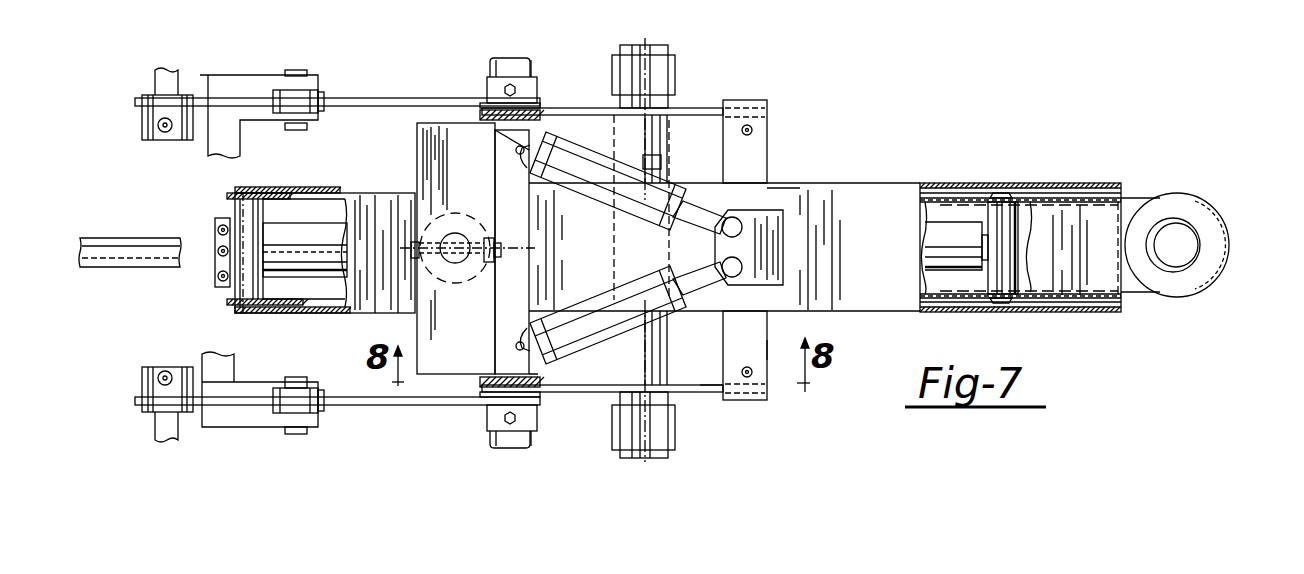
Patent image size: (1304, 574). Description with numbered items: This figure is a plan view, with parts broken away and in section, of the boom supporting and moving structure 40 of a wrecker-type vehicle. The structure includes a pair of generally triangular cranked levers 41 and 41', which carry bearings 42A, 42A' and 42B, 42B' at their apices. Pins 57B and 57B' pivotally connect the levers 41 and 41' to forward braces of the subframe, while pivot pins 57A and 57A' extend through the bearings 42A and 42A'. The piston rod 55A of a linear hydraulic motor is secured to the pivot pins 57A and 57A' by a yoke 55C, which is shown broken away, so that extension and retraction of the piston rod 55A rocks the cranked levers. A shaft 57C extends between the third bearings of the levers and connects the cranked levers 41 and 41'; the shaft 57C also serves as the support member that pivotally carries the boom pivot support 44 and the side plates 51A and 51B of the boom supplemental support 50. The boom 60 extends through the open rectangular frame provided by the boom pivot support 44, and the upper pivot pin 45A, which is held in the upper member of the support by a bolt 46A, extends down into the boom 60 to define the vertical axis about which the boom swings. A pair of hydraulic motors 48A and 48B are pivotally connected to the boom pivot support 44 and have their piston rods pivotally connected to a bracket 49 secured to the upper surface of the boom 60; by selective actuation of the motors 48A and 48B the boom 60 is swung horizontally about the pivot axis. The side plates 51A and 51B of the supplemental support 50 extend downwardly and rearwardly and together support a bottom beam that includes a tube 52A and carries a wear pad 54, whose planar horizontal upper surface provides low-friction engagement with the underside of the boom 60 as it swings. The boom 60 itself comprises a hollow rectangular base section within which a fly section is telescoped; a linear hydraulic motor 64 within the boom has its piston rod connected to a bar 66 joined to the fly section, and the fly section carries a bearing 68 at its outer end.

The boom supporting and moving structure 40 is at (468, 429).
The cranked lever 41 is at (339, 416).
The cranked lever 41' is at (339, 78).
The bearing 42A is at (337, 416).
The bearing 42A' is at (334, 87).
The bearing 42B is at (125, 389).
The bearing 42B' is at (124, 117).
The boom pivot support 44 is at (417, 153).
The upper pivot pin 45A is at (455, 260).
The bolt 46A is at (413, 242).
The hydraulic motor 48A is at (590, 160).
The hydraulic motor 48B is at (597, 320).
The bracket 49 is at (740, 240).
The boom supplemental support 50 is at (702, 390).
The side plate 51A is at (583, 395).
The side plate 51B is at (569, 108).
The tube 52A is at (647, 160).
The wear pad 54 is at (762, 350).
The piston rod 55A is at (140, 268).
The yoke 55C is at (222, 85).
The pivot pin 57A is at (318, 386).
The pivot pin 57A' is at (340, 83).
The pin 57B is at (123, 436).
The pin 57B' is at (123, 78).
The shaft 57C is at (528, 253).
The boom 60 is at (910, 100).
The linear hydraulic motor 64 is at (957, 233).
The bar 66 is at (1020, 232).
The bearing 68 is at (1205, 240).